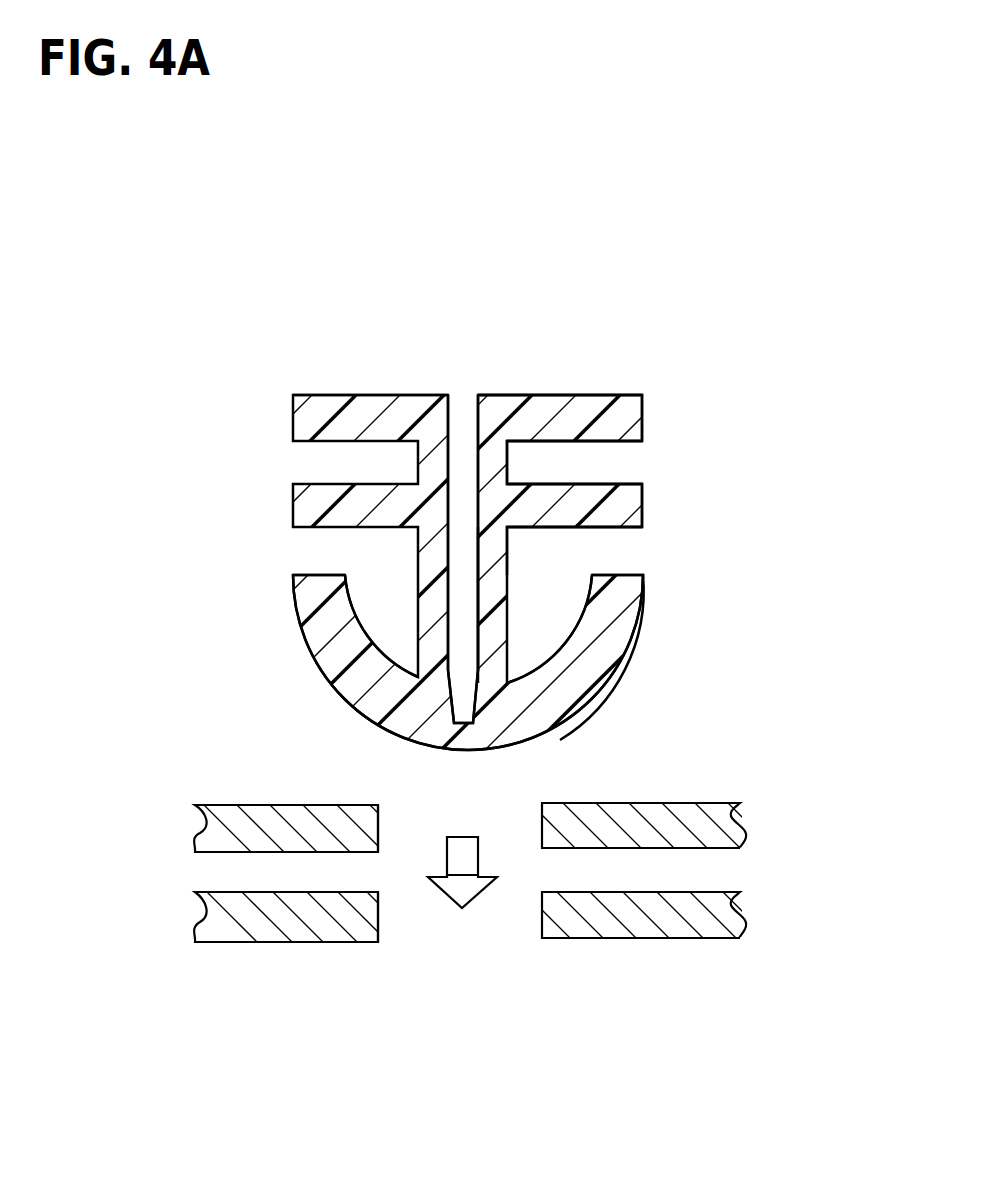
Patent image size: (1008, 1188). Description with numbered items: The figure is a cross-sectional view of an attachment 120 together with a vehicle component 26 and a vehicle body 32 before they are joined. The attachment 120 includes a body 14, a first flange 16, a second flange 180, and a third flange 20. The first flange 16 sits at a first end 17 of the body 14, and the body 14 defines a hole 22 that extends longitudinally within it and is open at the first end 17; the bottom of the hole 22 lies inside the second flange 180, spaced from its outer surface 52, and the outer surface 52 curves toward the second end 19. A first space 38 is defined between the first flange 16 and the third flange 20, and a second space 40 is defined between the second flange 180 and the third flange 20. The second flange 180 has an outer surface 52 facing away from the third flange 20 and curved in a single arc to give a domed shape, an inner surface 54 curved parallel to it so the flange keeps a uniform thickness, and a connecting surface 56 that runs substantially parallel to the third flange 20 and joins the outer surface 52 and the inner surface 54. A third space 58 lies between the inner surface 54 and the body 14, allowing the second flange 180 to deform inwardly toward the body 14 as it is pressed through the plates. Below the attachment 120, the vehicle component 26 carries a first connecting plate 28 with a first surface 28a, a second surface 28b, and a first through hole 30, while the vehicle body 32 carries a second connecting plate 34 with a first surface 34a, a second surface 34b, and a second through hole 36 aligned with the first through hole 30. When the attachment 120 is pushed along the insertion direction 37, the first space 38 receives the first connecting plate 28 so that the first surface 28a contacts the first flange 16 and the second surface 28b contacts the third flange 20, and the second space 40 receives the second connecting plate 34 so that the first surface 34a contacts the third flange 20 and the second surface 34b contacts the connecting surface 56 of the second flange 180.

The attachment 120 is at (678, 331).
The body 14 is at (501, 398).
The first flange 16 is at (627, 418).
The first end 17 is at (367, 395).
The second end 19 is at (465, 755).
The third flange 20 is at (627, 503).
The hole 22 is at (458, 405).
The vehicle component 26 is at (778, 853).
The first connecting plate 28 is at (230, 825).
The first surface 28a is at (230, 805).
The second surface 28b is at (240, 852).
The first through hole 30 is at (380, 828).
The vehicle body 32 is at (778, 953).
The second connecting plate 34 is at (232, 912).
The first surface 34a is at (243, 893).
The second surface 34b is at (247, 942).
The second through hole 36 is at (380, 916).
The insertion direction 37 is at (462, 872).
The first space 38 is at (583, 464).
The second space 40 is at (560, 555).
The outer surface 52 is at (365, 720).
The inner surface 54 is at (308, 648).
The connecting surface 56 is at (320, 576).
The third space 58 is at (538, 630).
The second flange 180 is at (617, 607).